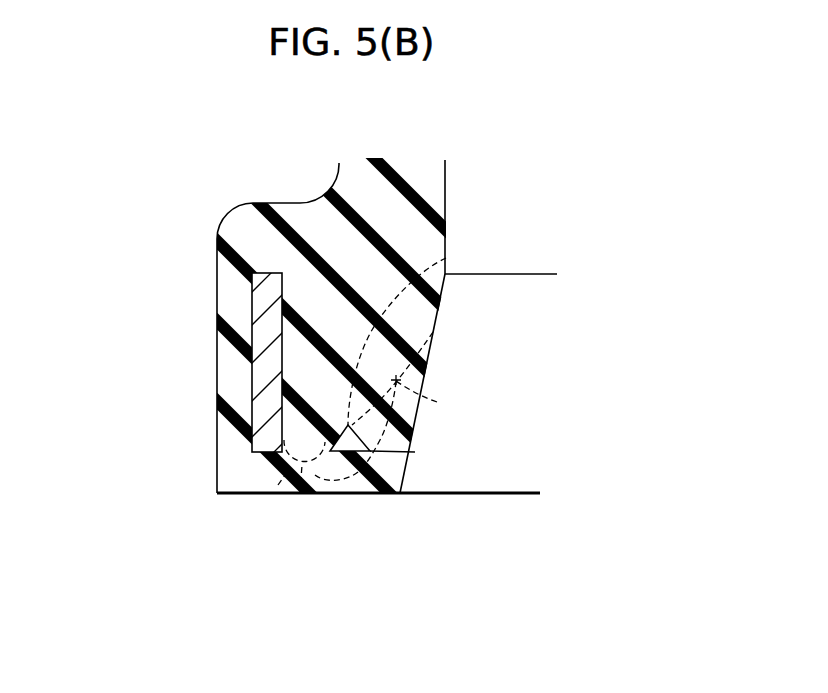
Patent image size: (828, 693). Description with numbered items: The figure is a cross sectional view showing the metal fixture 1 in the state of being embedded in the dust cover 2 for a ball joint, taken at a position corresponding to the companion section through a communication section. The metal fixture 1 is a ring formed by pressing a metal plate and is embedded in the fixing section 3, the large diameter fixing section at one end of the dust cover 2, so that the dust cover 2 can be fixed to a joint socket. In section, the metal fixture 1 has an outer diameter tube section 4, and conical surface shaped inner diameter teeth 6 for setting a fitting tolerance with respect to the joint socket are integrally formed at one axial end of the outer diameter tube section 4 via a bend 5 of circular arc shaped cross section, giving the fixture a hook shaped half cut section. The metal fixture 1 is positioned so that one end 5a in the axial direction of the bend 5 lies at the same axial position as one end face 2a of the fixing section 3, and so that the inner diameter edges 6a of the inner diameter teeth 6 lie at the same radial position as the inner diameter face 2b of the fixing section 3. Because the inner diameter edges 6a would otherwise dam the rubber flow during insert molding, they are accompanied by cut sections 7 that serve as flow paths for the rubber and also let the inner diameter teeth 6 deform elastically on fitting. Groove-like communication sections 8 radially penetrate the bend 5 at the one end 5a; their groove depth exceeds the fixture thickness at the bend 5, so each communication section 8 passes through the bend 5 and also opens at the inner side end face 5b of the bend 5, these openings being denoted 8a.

The metal fixture 1 is at (255, 298).
The dust cover 2 is at (432, 202).
The one end face in the axial direction of the fixing section 2a is at (353, 494).
The inner diameter face of the fixing section 2b is at (437, 378).
The fixing section 3 is at (237, 375).
The outer diameter tube section 4 is at (267, 333).
The bend 5 is at (278, 485).
The one end in the axial direction of the bend 5a is at (300, 493).
The inner side end face of the bend 5b is at (284, 442).
The inner diameter teeth 6 is at (415, 452).
The inner diameter edges of the inner diameter teeth 6a is at (437, 402).
The cut sections 7 is at (433, 332).
The communication sections 8 is at (317, 478).
The openings 8a is at (446, 258).